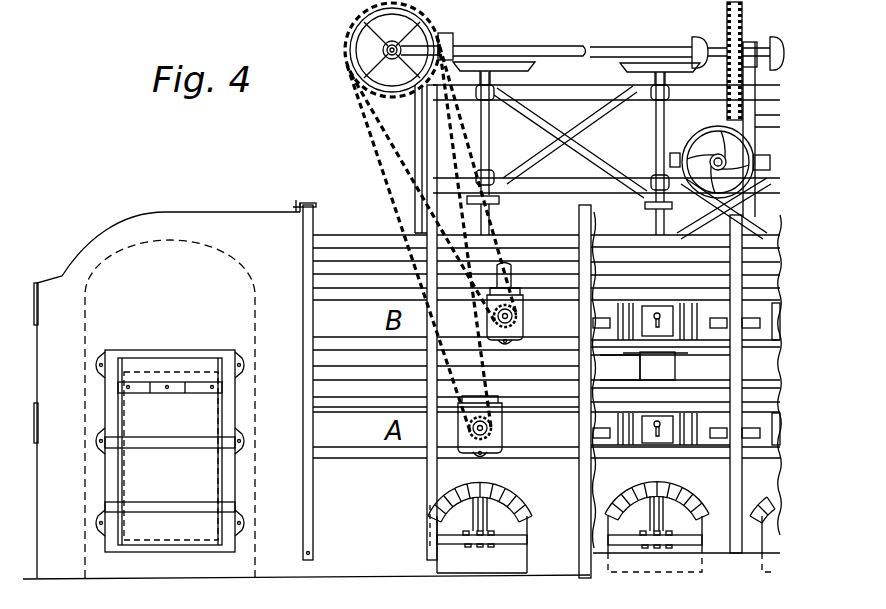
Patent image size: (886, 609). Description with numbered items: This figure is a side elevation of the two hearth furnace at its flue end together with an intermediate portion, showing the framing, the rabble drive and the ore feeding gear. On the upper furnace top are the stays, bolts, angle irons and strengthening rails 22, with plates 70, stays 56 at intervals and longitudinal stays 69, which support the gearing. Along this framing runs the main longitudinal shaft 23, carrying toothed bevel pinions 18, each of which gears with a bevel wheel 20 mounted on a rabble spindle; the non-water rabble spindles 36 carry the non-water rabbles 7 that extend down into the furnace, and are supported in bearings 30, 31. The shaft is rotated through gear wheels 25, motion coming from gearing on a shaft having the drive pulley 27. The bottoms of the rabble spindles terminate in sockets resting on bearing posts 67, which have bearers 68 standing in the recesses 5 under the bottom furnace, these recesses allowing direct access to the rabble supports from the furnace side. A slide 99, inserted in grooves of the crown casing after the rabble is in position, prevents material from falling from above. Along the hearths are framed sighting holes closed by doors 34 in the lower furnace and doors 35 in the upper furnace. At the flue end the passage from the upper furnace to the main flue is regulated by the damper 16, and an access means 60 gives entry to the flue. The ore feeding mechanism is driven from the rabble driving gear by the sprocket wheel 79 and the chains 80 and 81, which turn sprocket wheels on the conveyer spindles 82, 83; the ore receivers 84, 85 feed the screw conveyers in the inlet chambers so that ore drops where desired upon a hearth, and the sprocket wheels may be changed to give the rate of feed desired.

The recesses 5 is at (569, 541).
The non-water rabbles 7 is at (482, 225).
The damper 16 is at (296, 205).
The toothed bevel pinions 18 is at (455, 42).
The bevel wheel 20 is at (620, 66).
The stays, bolts, angle irons, and strengthening rails 22 is at (530, 113).
The main longitudinal shaft 23 is at (543, 44).
The gear wheels 25 is at (727, 32).
The drive pulley 27 is at (752, 142).
The bearings 30 is at (489, 94).
The bearings 31 is at (492, 173).
The closing doors 34 is at (650, 426).
The closing doors 35 is at (640, 362).
The non-water rabble spindles 36 is at (657, 136).
The stays 56 is at (427, 478).
The access means 60 is at (170, 451).
The bearing posts 67 is at (650, 515).
The bearers 68 is at (472, 541).
The longitudinal stays 69 is at (313, 290).
The plates 70 is at (593, 323).
The sprocket wheel 79 is at (352, 70).
The chain 80 is at (378, 116).
The chain 81 is at (390, 195).
The conveyer spindle 82 is at (492, 426).
The conveyer spindle 83 is at (516, 316).
The ore receiver 84 is at (488, 382).
The ore receiver 85 is at (510, 268).
The slide 99 is at (655, 366).